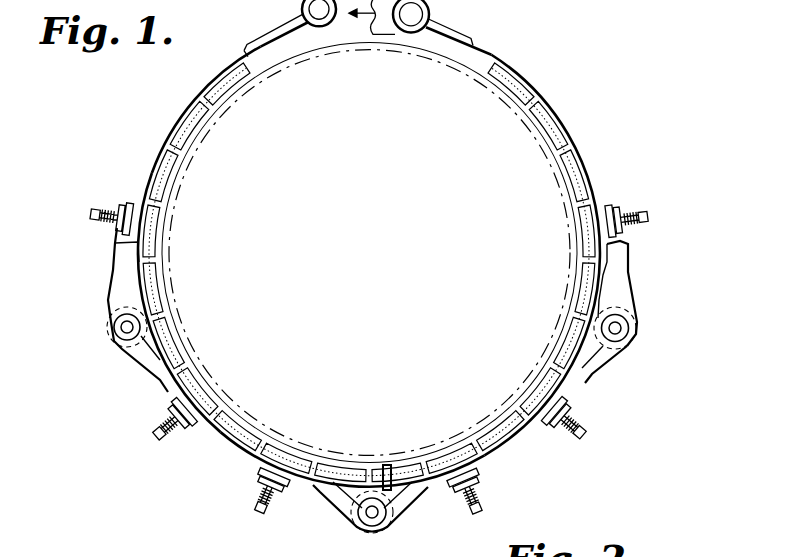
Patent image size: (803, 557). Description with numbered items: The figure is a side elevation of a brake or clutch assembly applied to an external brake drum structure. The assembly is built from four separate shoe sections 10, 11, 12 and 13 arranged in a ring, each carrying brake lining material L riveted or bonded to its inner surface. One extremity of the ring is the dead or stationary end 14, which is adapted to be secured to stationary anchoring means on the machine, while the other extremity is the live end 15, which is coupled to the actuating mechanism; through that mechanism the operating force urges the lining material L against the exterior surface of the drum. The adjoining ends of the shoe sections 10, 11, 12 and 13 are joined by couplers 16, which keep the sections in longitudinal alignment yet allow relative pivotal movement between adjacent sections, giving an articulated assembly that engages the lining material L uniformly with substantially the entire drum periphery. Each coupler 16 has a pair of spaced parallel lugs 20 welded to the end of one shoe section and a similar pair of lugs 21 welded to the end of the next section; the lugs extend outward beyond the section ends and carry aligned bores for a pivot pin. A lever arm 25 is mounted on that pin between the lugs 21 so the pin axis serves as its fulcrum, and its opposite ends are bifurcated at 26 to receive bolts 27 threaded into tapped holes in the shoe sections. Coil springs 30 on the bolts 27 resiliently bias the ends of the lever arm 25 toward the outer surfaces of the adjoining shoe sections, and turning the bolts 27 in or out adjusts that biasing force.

The shoe section 10 is at (583, 158).
The shoe section 11 is at (567, 446).
The shoe section 12 is at (242, 449).
The shoe section 13 is at (167, 147).
The dead end 14 is at (280, 33).
The live end 15 is at (503, 53).
The coupler 16 is at (106, 332).
The lugs 20 is at (607, 362).
The lugs 21 is at (618, 302).
The lever arm 25 is at (628, 248).
The bifurcated end 26 is at (618, 204).
The bolt 27 is at (648, 213).
The coil spring 30 is at (637, 207).
The brake lining material L is at (177, 177).